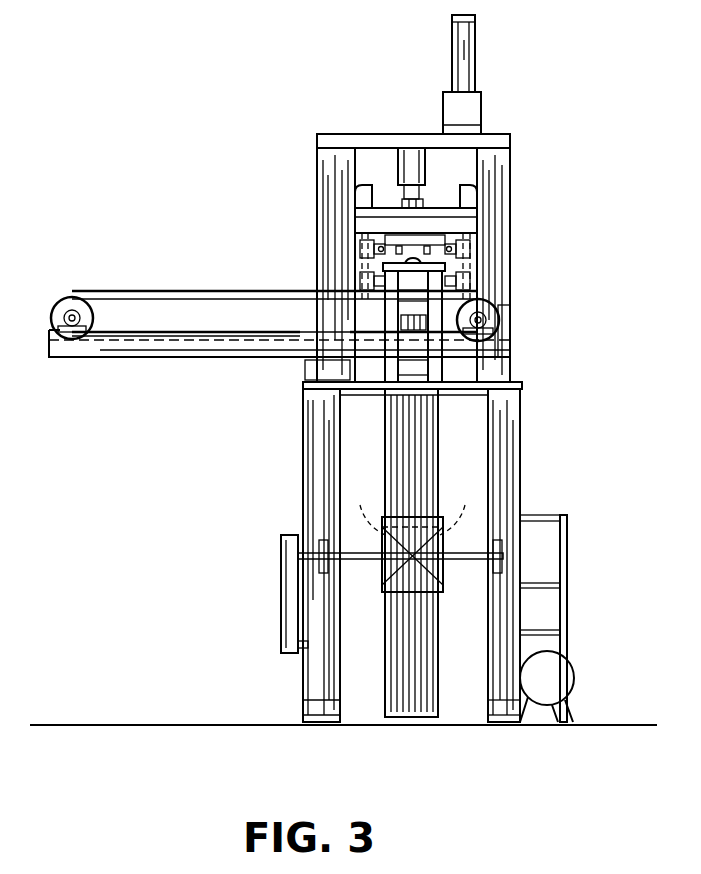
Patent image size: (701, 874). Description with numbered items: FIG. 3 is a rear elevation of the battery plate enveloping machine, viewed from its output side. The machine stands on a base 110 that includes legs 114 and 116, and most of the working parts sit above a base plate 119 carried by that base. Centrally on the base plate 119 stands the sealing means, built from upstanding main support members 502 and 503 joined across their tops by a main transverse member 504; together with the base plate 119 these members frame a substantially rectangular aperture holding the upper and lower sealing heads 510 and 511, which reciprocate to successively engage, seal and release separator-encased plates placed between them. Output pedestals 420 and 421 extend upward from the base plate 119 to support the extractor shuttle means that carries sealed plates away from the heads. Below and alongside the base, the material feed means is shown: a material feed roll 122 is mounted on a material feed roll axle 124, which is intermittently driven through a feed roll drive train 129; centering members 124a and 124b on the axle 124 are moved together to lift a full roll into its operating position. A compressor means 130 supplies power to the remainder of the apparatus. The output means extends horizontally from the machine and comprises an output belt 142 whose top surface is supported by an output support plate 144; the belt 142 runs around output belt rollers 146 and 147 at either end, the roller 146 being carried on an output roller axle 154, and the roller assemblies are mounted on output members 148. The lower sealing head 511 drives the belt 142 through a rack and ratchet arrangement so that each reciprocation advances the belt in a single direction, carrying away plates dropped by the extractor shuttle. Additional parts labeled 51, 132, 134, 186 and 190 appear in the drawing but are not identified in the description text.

The piston cylinder 51 is at (370, 205).
The base 110 is at (302, 492).
The leg 114 is at (318, 698).
The leg 116 is at (522, 485).
The base plate 119 is at (522, 385).
The material feed roll 122 is at (425, 675).
The material feed roll axle 124 is at (470, 560).
The centering member 124a is at (365, 510).
The centering member 124b is at (465, 510).
The feed roll drive train 129 is at (288, 613).
The compressor means 130 is at (563, 635).
The motor 132 is at (548, 682).
The motor frame 134 is at (548, 600).
The output belt 142 is at (250, 291).
The output support plate 144 is at (212, 300).
The output belt roller 146 is at (480, 316).
The output belt roller 147 is at (63, 310).
The output members 148 is at (182, 350).
The output roller axle 154 is at (498, 332).
The actuator rod 186 is at (465, 57).
The upper housing frame 190 is at (455, 170).
The output pedestal 420 is at (391, 393).
The output pedestal 421 is at (435, 393).
The main support member 502 is at (333, 180).
The main support member 503 is at (492, 200).
The main transverse member 504 is at (386, 105).
The upper sealing head 510 is at (452, 228).
The lower sealing head 511 is at (318, 314).